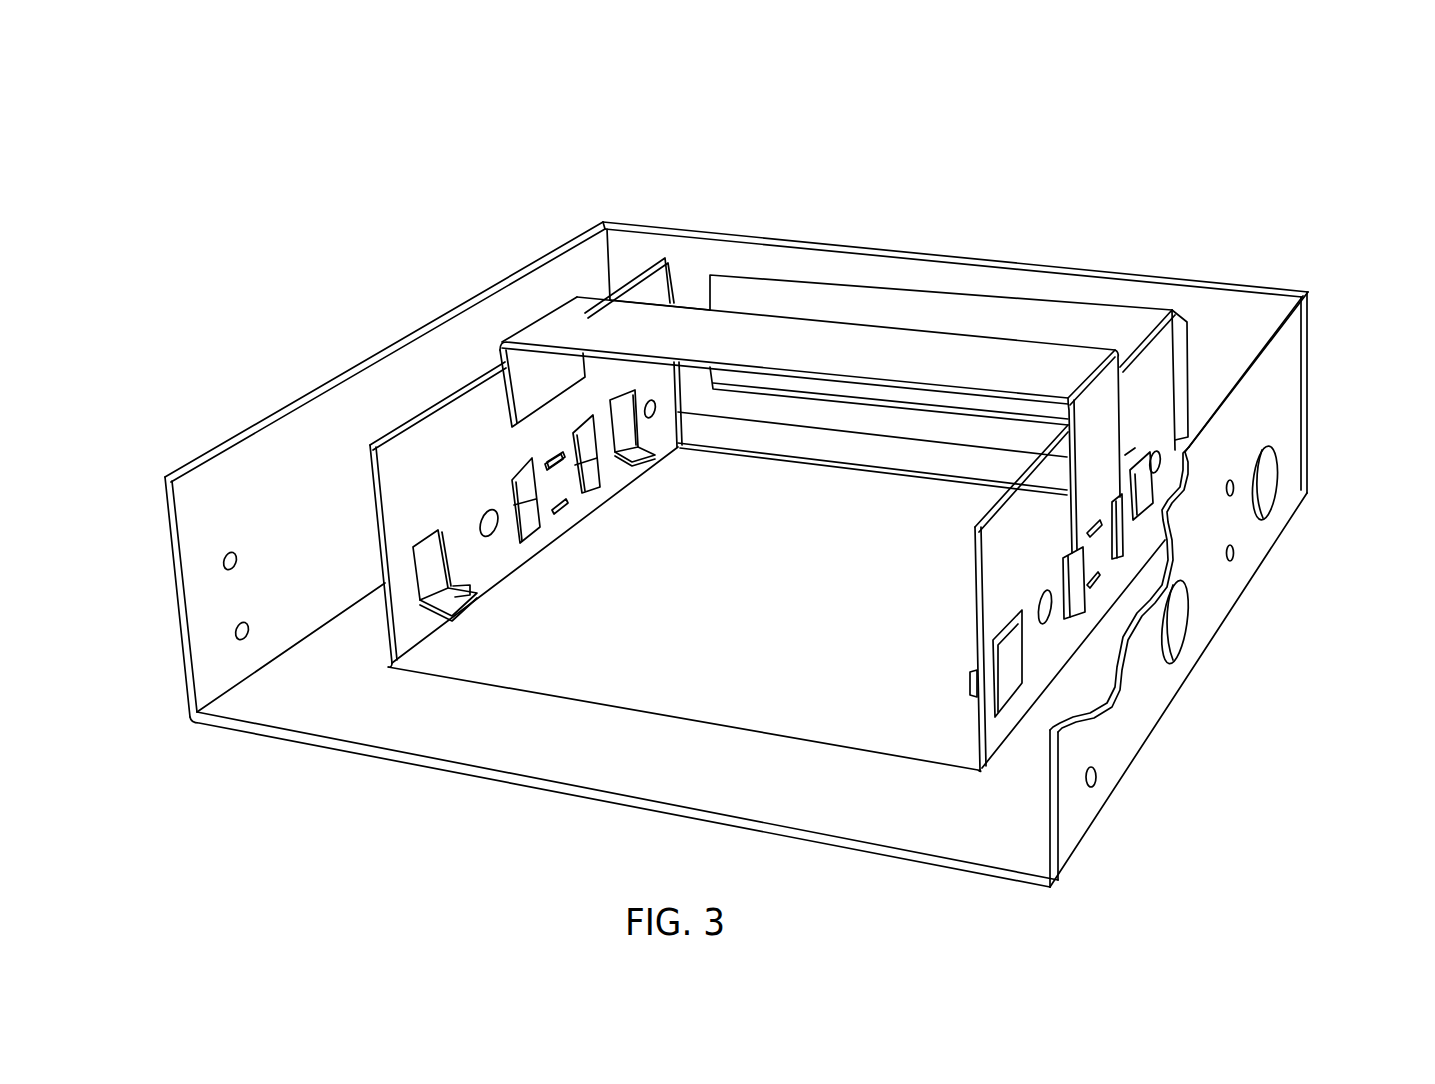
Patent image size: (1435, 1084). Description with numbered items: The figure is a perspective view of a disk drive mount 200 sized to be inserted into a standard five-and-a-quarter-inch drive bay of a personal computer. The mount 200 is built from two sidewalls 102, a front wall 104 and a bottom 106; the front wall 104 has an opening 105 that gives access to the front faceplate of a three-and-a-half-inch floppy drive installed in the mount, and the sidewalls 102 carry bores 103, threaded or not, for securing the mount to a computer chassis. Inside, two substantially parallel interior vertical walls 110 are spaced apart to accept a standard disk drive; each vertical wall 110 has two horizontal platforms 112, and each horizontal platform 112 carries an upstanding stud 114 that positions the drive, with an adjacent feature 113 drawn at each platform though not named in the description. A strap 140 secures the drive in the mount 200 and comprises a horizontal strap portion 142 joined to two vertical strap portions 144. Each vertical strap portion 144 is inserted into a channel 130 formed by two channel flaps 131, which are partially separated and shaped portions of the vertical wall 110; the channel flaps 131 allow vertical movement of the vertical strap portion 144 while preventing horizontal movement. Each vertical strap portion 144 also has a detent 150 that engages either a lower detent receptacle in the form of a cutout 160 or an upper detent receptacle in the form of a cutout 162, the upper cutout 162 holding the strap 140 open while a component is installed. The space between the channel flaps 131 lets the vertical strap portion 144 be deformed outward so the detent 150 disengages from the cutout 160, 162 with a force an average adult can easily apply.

The sidewall 102 is at (356, 400).
The bore 103 is at (240, 631).
The front wall 104 is at (636, 247).
The opening 105 is at (724, 291).
The bottom 106 is at (436, 735).
The interior vertical wall 110 is at (392, 463).
The horizontal platform 112 is at (648, 458).
The slot 113 is at (623, 413).
The upstanding stud 114 is at (655, 447).
The channel 130 is at (1127, 462).
The channel flap 131 is at (1073, 570).
The strap 140 is at (838, 335).
The horizontal strap portion 142 is at (807, 350).
The vertical strap portion 144 is at (810, 451).
The detent 150 is at (563, 470).
The cutout 160 is at (560, 514).
The cutout 162 is at (553, 457).
The mount 200 is at (1268, 288).